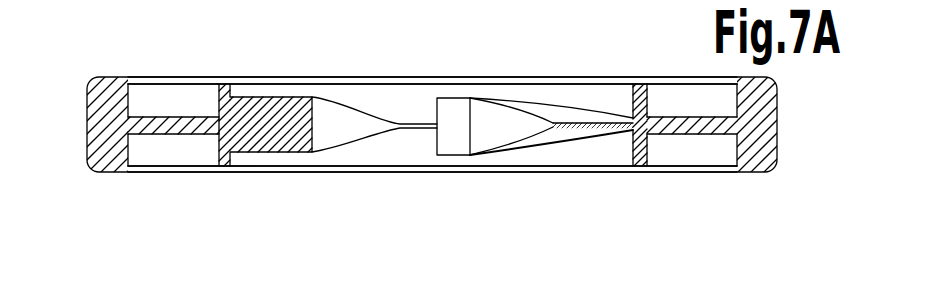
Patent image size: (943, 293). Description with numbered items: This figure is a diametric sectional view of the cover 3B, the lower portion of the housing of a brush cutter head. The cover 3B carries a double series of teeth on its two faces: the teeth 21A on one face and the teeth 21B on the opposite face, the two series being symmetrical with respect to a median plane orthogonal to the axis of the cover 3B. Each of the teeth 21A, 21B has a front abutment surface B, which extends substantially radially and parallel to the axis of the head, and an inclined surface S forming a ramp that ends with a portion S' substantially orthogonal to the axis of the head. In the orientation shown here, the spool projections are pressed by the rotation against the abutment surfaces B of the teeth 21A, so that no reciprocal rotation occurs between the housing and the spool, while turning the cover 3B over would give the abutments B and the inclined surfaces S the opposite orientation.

The cover 3B is at (115, 68).
The front abutment surface B is at (436, 108).
The end portion of the inclined surface S' is at (453, 124).
The inclined surface S is at (551, 124).
The teeth 21A is at (516, 94).
The teeth 21B is at (518, 158).